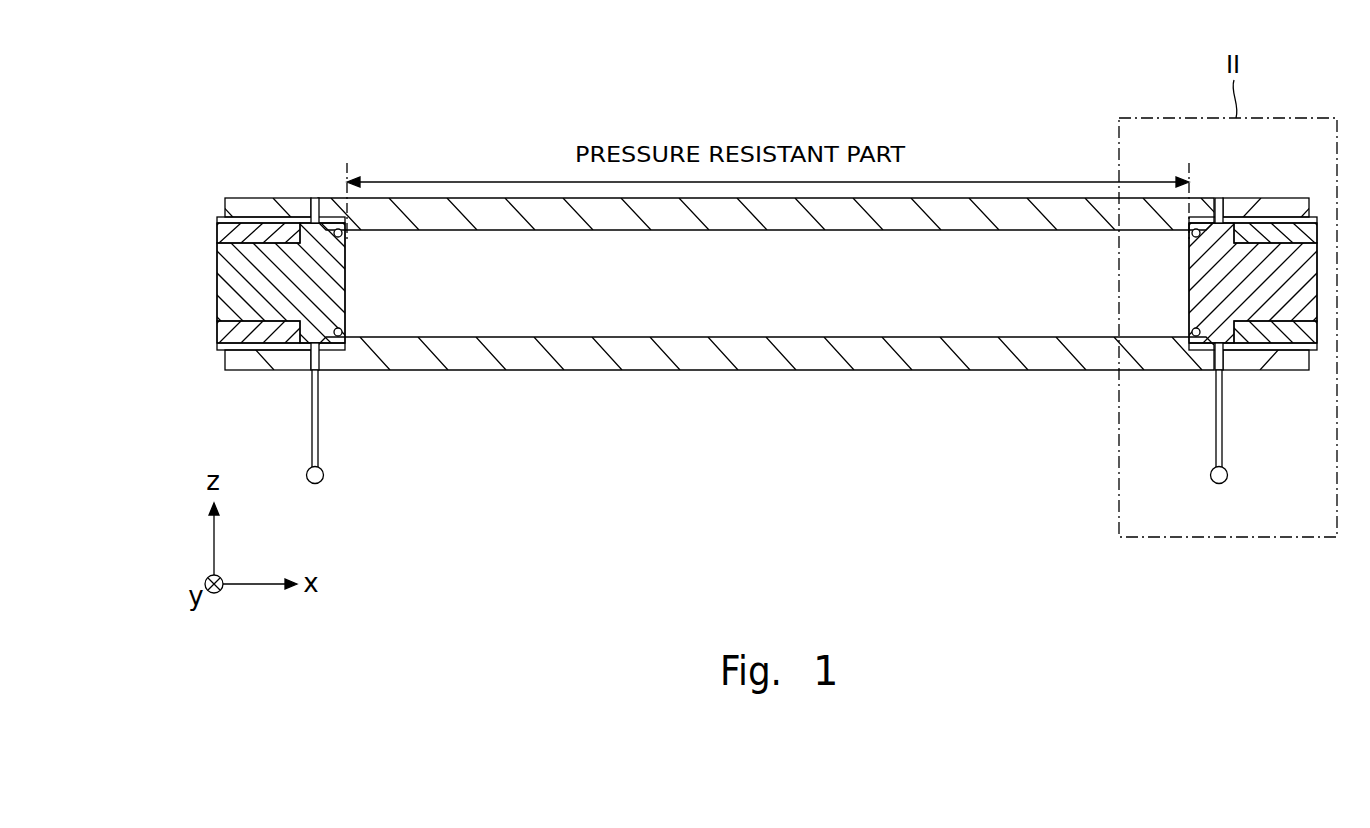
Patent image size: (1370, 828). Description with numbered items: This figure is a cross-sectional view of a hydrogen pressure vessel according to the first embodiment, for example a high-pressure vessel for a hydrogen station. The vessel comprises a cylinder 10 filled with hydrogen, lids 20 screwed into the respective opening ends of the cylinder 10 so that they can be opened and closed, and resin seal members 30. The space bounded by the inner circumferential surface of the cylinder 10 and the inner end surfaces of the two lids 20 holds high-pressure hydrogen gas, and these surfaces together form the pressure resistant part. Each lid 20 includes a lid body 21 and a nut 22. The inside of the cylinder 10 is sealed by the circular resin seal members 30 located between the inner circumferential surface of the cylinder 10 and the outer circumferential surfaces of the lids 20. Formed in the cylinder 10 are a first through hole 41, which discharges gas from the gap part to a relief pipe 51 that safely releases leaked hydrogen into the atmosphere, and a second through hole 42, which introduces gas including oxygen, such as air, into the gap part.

The cylinder 10 is at (598, 370).
The lid 20 is at (143, 215).
The lid body 21 is at (217, 276).
The nut 22 is at (217, 235).
The resin seal member 30 is at (343, 328).
The first through hole 41 is at (320, 370).
The second through hole 42 is at (316, 198).
The relief pipe 51 is at (320, 422).